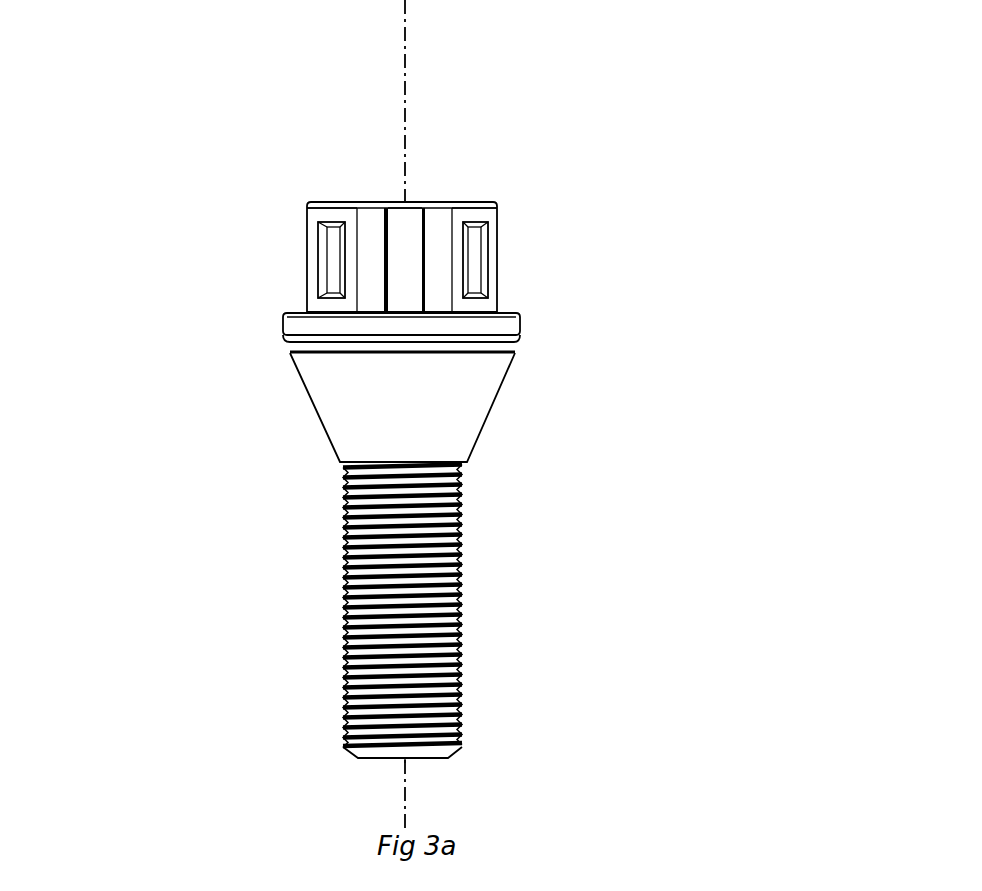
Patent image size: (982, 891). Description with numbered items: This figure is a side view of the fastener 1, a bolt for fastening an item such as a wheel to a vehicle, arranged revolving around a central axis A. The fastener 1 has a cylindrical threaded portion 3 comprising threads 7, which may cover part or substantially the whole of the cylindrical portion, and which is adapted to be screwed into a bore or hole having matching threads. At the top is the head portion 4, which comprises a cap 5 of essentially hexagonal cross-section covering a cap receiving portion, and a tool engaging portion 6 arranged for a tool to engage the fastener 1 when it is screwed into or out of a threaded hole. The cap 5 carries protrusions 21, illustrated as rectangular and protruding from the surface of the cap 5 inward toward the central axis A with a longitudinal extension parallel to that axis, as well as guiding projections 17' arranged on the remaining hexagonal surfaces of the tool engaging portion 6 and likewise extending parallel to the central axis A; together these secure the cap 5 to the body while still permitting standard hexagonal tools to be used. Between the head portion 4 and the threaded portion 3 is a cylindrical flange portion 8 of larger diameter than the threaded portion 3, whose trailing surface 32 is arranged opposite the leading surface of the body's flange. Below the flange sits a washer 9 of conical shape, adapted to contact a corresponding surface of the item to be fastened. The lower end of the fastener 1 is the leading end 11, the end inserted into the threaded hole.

The fastener 1 is at (646, 156).
The threaded portion 3 is at (396, 638).
The head portion 4 is at (272, 192).
The cap 5 is at (345, 201).
The tool engaging portion 6 is at (438, 223).
The threads 7 is at (343, 617).
The flange portion 8 is at (507, 325).
The washer 9 is at (477, 412).
The leading end 11 is at (440, 768).
The guiding projections 17' is at (383, 154).
The protrusions 21 is at (336, 253).
The trailing surface 32 is at (295, 310).
The central axis A is at (405, 32).